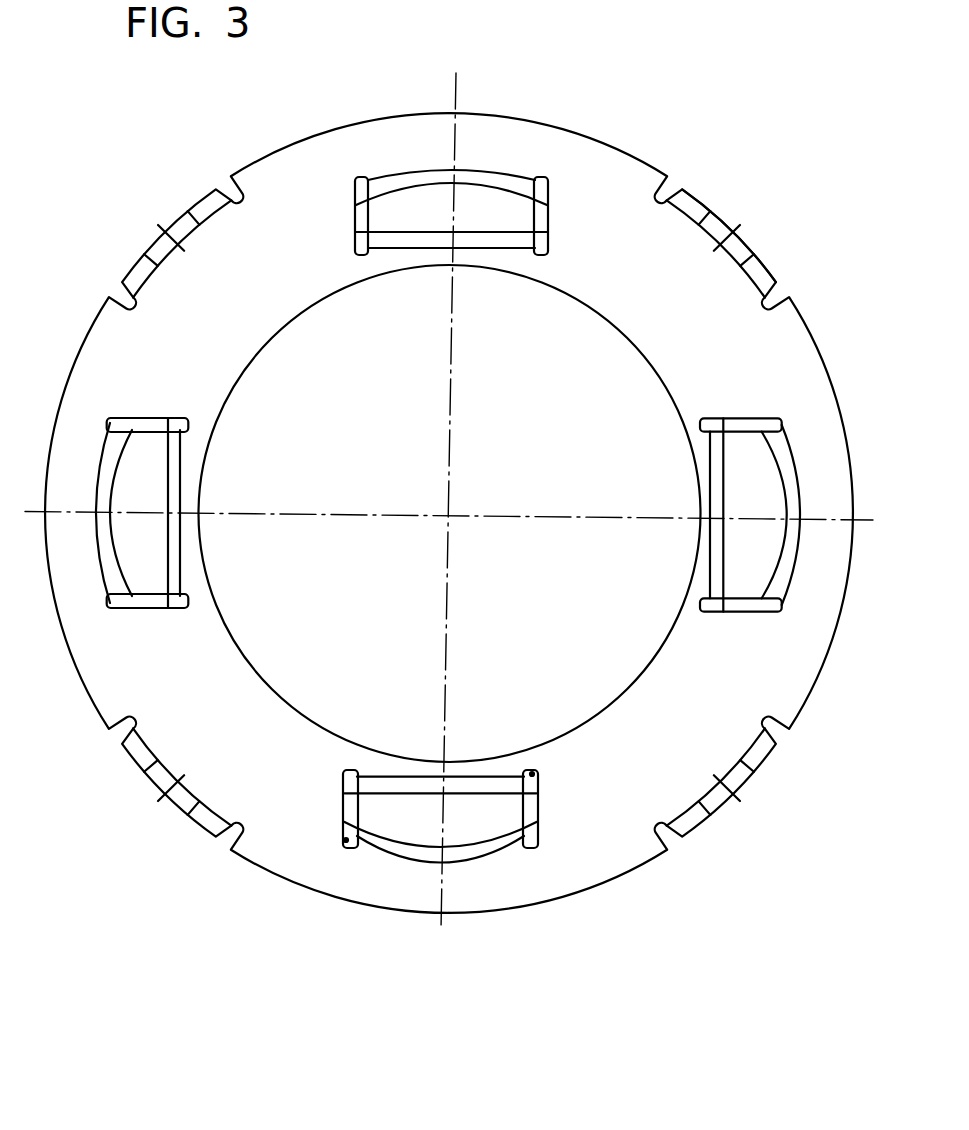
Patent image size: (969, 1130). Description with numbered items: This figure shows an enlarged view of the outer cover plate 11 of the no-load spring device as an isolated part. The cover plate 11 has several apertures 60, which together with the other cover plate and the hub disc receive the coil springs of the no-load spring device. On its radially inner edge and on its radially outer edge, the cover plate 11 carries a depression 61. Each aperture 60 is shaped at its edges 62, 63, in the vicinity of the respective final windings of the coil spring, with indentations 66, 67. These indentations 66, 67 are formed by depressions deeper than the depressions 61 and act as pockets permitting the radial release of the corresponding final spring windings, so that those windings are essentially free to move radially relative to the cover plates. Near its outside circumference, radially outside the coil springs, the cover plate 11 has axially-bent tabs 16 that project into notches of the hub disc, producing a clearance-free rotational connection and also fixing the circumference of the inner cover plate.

The cover plate 11 is at (804, 317).
The axially-bent tabs 16 is at (740, 248).
The aperture 60 is at (445, 808).
The depression 61 is at (465, 785).
The edge of the aperture 62 is at (344, 799).
The edge of the aperture 63 is at (538, 805).
The indentation 66 is at (345, 842).
The indentation 67 is at (532, 773).